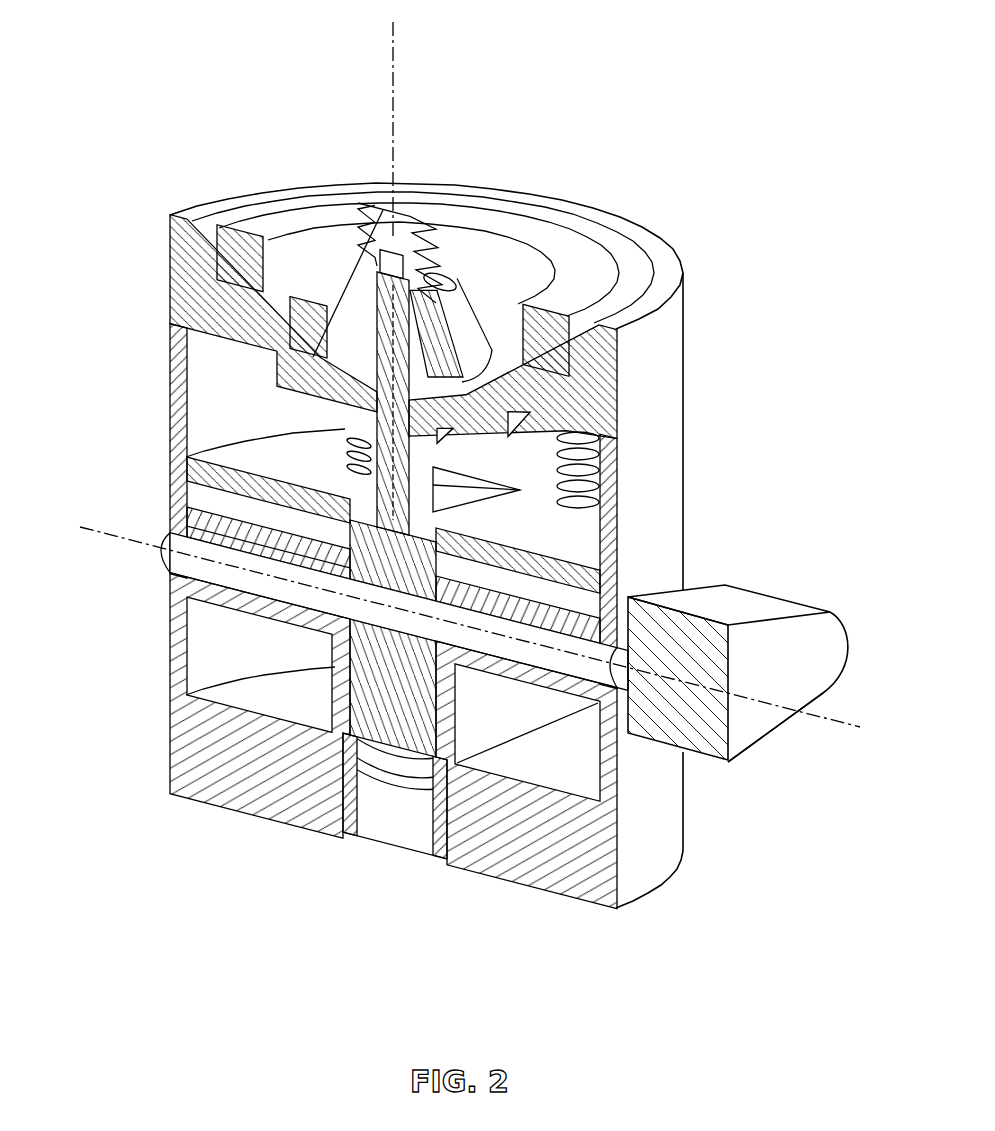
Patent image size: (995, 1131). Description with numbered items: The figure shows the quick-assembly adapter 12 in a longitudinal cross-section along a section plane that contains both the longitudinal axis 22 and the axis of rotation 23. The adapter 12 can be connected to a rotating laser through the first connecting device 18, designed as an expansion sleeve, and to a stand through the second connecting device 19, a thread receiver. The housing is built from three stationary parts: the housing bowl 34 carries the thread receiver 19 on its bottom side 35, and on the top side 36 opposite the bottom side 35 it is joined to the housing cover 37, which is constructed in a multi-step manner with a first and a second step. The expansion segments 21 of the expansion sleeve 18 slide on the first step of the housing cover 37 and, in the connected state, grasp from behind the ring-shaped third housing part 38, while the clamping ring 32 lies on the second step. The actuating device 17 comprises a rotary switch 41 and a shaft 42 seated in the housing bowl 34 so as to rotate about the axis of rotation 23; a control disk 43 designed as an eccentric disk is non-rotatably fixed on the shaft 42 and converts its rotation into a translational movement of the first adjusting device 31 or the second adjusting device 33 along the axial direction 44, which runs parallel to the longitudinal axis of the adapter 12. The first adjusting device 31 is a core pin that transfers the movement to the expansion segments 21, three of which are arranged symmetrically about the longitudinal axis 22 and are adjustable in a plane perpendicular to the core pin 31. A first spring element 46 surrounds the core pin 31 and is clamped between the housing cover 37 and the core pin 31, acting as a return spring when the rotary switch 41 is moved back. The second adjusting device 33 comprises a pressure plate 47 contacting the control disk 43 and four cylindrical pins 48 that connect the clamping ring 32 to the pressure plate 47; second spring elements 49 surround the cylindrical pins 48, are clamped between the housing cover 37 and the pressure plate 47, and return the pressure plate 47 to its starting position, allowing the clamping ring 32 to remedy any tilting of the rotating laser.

The quick-assembly adapter 12 is at (193, 98).
The actuating device 17 is at (762, 590).
The first connecting device 18 is at (406, 188).
The second connecting device 19 is at (414, 836).
The expansion segments 21 is at (448, 248).
The longitudinal axis 22 is at (392, 54).
The axis of rotation 23 is at (82, 528).
The first adjusting device 31 is at (363, 208).
The clamping ring 32 is at (240, 262).
The second adjusting device 33 is at (608, 473).
The housing bowl 34 is at (170, 393).
The bottom side 35 is at (235, 808).
The top side 36 is at (621, 232).
The housing cover 37 is at (172, 300).
The third housing part 38 is at (303, 300).
The rotary switch 41 is at (712, 736).
The shaft 42 is at (185, 570).
The control disk 43 is at (390, 766).
The axial direction 44 is at (384, 370).
The first spring element 46 is at (360, 488).
The pressure plate 47 is at (185, 470).
The cylindrical pins 48 is at (600, 505).
The second spring elements 49 is at (555, 490).